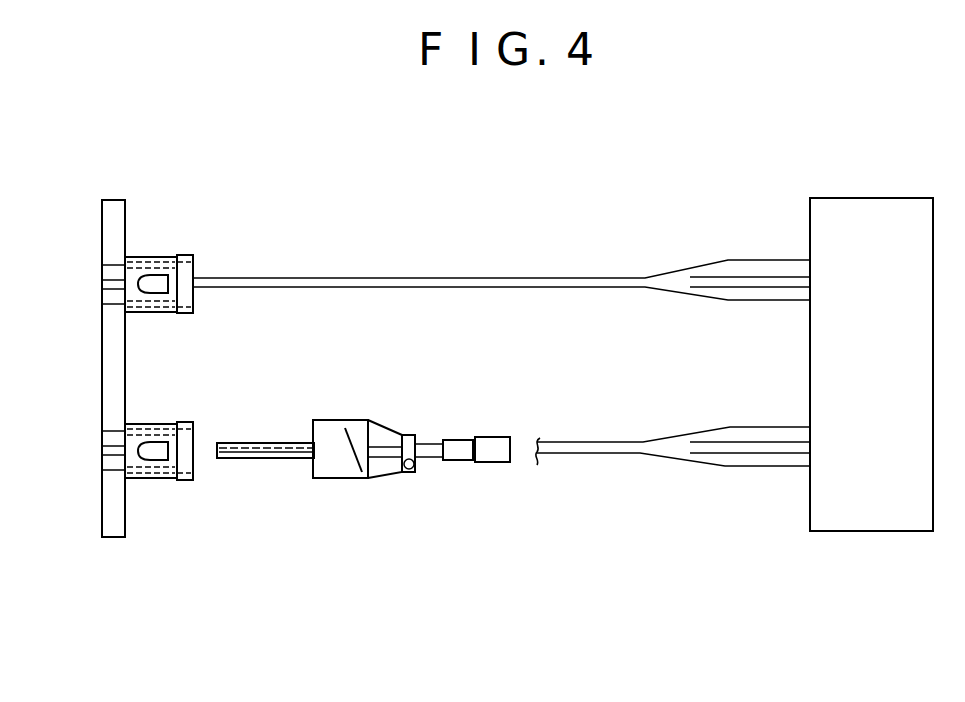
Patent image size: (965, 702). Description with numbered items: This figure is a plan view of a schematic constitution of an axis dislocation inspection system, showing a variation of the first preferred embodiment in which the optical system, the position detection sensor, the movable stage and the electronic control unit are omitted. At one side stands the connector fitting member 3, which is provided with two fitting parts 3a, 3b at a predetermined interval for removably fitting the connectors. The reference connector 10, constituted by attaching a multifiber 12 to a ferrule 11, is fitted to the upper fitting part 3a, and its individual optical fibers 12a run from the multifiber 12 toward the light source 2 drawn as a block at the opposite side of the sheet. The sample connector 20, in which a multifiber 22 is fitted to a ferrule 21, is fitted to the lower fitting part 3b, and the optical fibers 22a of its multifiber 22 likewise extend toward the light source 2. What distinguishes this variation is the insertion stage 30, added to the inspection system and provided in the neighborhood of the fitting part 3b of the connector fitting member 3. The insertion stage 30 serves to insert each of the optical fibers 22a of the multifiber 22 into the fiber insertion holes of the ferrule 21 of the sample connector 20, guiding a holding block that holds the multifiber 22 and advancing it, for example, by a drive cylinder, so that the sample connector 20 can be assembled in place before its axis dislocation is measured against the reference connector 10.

The light source 2 is at (869, 212).
The connector fitting member 3 is at (113, 198).
The fitting part 3a is at (116, 262).
The fitting part 3b is at (115, 462).
The reference connector 10 is at (222, 254).
The ferrule 11 is at (188, 313).
The multifiber 12 is at (501, 233).
The optical fibers 12a is at (762, 285).
The sample connector 20 is at (206, 494).
The ferrule 21 is at (186, 423).
The multifiber 22 is at (585, 455).
The optical fibers 22a is at (285, 455).
The insertion stage 30 is at (383, 465).